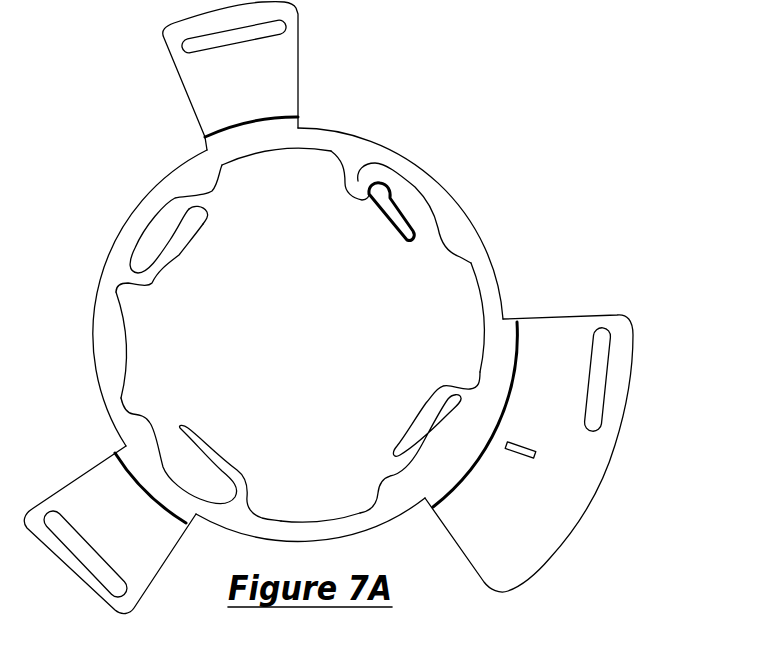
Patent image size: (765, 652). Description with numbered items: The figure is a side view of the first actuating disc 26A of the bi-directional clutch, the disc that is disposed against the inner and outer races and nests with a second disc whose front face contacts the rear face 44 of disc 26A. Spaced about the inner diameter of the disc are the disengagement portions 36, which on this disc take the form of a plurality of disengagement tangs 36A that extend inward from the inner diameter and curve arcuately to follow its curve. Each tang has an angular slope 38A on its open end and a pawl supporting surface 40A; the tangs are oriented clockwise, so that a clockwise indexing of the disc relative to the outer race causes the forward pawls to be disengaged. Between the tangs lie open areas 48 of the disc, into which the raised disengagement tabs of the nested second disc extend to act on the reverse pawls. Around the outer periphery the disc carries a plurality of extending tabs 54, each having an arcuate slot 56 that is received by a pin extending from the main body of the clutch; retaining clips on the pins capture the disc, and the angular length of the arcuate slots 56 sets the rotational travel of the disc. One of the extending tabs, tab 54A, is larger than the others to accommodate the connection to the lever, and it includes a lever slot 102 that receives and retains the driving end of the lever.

The first actuating disc 26A is at (343, 318).
The rear face 44 is at (323, 334).
The open areas 48 is at (292, 190).
The disengagement portions 36 is at (220, 237).
The disengagement tangs 36A is at (181, 256).
The angular slope 38A is at (211, 215).
The pawl supporting surface 40A is at (373, 208).
The extending tabs 54 is at (298, 70).
The larger extending tab 54A is at (533, 545).
The arcuate slot 56 is at (285, 26).
The lever slot 102 is at (536, 453).